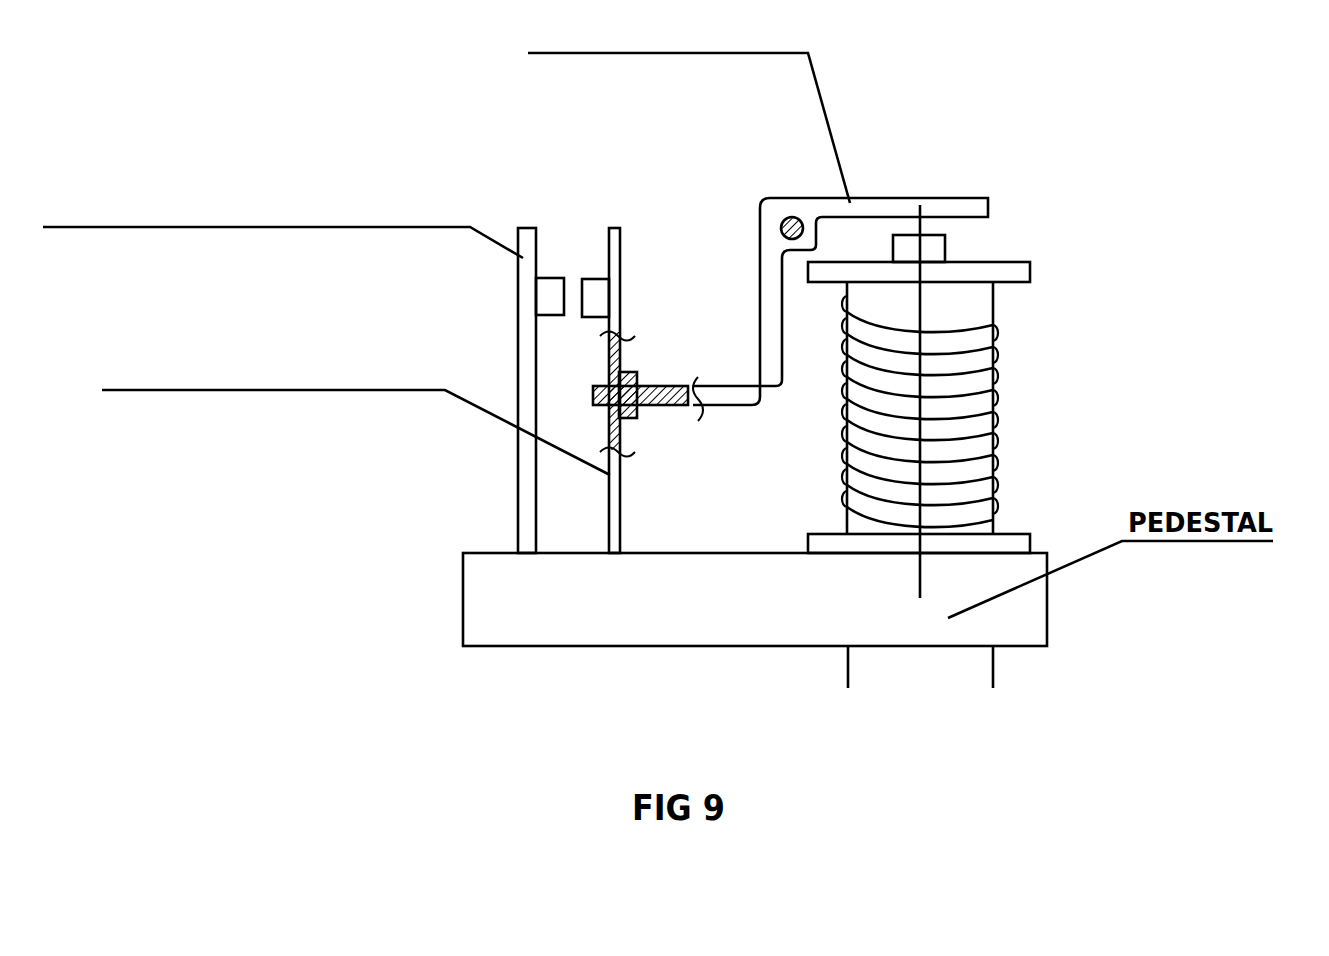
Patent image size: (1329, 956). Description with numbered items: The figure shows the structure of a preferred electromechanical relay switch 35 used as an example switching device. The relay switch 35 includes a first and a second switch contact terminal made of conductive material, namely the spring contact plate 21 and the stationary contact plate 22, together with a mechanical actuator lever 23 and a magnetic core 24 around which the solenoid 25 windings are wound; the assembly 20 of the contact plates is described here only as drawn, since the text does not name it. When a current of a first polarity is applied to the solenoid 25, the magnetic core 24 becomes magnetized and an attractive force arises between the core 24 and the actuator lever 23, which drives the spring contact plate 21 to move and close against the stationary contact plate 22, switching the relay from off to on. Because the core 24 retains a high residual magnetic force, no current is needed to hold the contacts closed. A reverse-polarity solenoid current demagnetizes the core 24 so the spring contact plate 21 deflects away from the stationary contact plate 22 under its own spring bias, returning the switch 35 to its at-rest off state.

The contact assembly 20 is at (518, 183).
The spring contact plate 21 is at (625, 238).
The stationary contact plate 22 is at (540, 228).
The actuator lever 23 is at (887, 198).
The magnetic core 24 is at (950, 245).
The solenoid 25 is at (978, 407).
The electromechanical switch 35 is at (1012, 137).